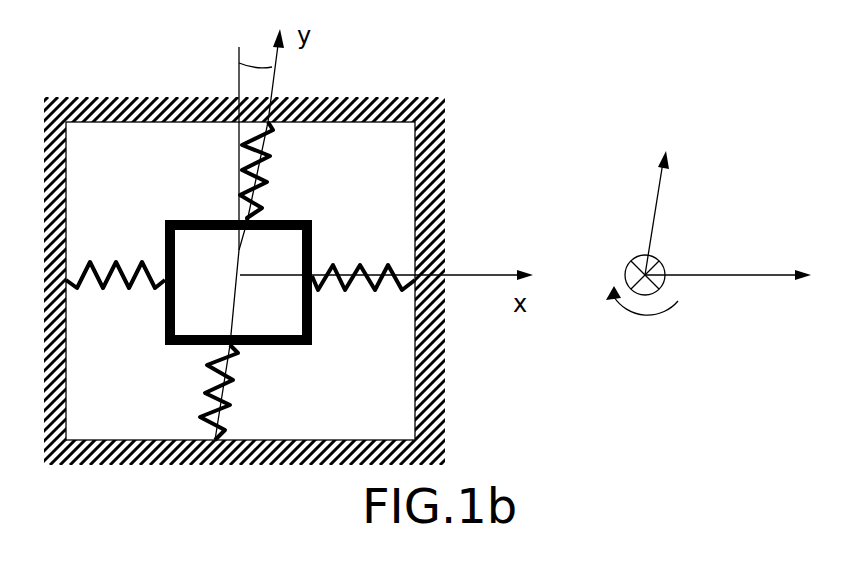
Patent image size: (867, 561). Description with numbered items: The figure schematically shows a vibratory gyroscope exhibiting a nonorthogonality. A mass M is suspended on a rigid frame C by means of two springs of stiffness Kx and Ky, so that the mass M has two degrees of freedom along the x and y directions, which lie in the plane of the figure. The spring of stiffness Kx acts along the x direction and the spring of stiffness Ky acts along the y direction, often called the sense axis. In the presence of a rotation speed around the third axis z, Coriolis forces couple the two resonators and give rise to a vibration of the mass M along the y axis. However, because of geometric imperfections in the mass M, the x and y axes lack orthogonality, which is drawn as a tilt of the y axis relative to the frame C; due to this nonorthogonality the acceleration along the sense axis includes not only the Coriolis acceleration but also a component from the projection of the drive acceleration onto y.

The rigid frame C is at (427, 168).
The mass M is at (238, 282).
The spring of stiffness Kx is at (240, 257).
The spring of stiffness Ky is at (258, 281).